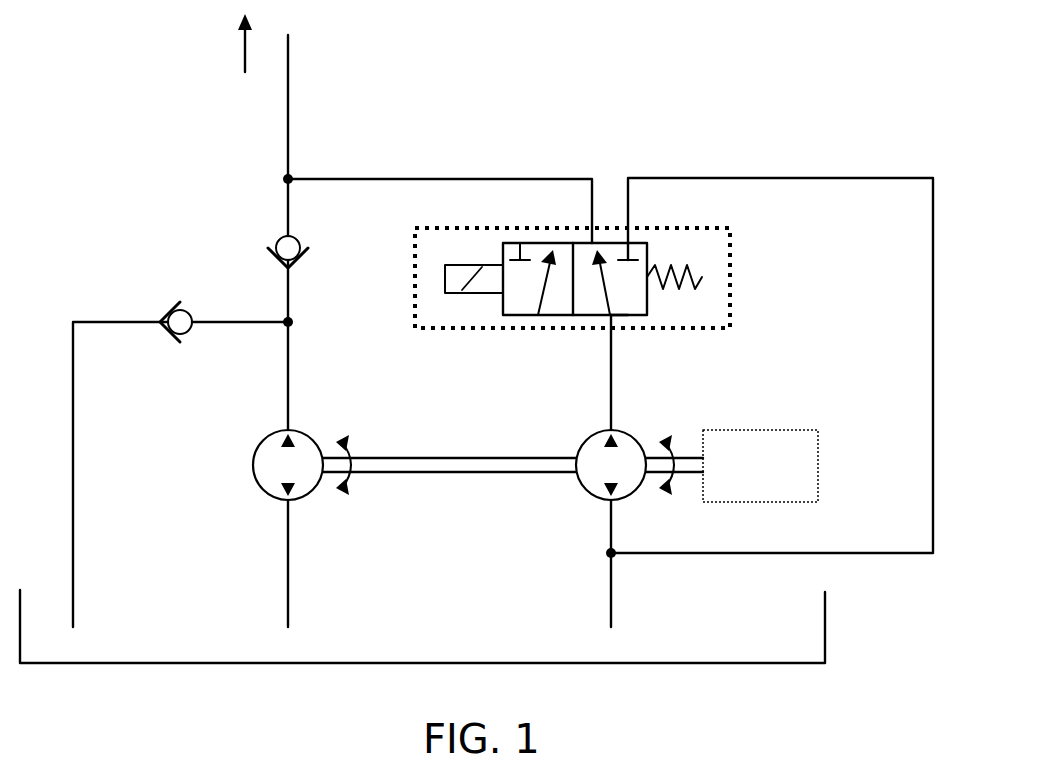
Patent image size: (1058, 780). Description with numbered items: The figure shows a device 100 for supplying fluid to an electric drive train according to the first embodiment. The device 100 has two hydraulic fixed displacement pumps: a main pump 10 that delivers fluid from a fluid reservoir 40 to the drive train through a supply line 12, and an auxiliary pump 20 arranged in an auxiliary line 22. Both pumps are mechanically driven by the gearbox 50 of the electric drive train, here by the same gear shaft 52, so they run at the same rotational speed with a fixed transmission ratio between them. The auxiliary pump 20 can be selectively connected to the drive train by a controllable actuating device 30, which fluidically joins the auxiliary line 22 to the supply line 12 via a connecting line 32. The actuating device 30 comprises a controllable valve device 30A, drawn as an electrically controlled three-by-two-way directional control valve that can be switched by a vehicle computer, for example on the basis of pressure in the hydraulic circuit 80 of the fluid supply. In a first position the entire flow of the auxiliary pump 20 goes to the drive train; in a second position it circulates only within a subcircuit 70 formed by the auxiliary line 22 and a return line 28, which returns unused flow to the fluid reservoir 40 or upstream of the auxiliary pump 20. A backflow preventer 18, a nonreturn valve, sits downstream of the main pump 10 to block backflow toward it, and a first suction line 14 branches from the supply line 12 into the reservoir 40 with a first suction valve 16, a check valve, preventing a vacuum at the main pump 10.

The main pump 10 is at (253, 472).
The supply line 12 is at (288, 143).
The first suction line 14 is at (113, 321).
The first suction valve 16 is at (181, 309).
The backflow preventer 18 is at (300, 246).
The auxiliary pump 20 is at (587, 492).
The auxiliary line 22 is at (610, 388).
The return line 28 is at (815, 177).
The controllable actuating device 30 is at (731, 302).
The controllable valve device 30A is at (628, 308).
The connecting line 32 is at (488, 177).
The fluid reservoir 40 is at (826, 630).
The gearbox 50 is at (818, 467).
The gear shaft 52 is at (400, 467).
The subcircuit 70 is at (728, 155).
The hydraulic circuit 80 is at (198, 113).
The device for supplying fluid 100 is at (74, 735).